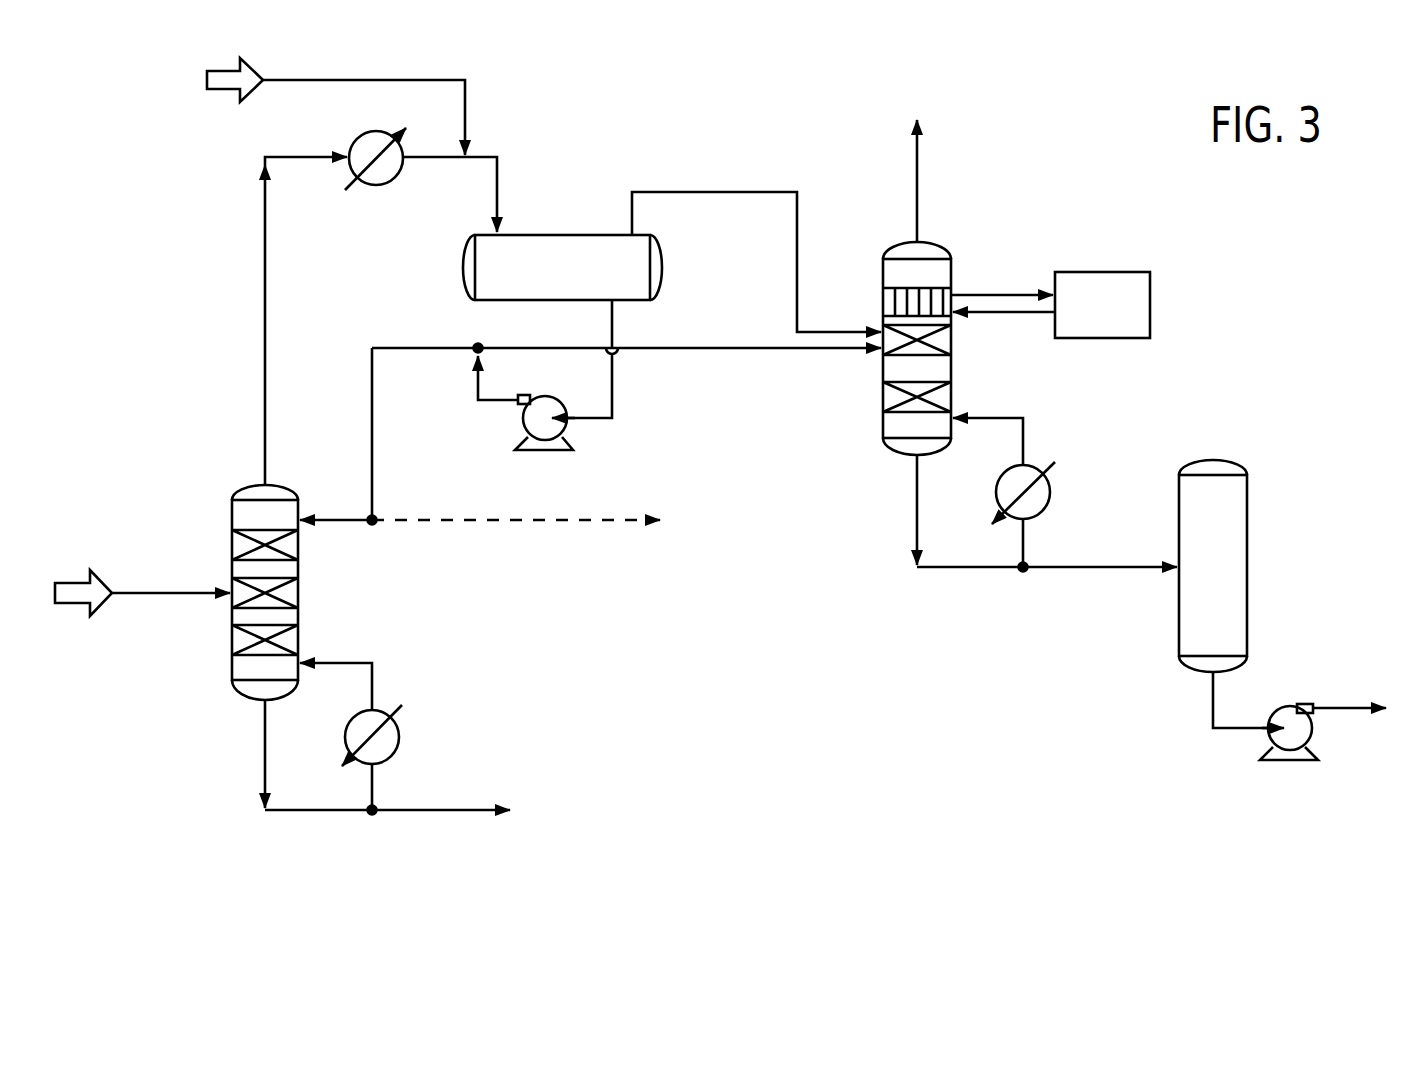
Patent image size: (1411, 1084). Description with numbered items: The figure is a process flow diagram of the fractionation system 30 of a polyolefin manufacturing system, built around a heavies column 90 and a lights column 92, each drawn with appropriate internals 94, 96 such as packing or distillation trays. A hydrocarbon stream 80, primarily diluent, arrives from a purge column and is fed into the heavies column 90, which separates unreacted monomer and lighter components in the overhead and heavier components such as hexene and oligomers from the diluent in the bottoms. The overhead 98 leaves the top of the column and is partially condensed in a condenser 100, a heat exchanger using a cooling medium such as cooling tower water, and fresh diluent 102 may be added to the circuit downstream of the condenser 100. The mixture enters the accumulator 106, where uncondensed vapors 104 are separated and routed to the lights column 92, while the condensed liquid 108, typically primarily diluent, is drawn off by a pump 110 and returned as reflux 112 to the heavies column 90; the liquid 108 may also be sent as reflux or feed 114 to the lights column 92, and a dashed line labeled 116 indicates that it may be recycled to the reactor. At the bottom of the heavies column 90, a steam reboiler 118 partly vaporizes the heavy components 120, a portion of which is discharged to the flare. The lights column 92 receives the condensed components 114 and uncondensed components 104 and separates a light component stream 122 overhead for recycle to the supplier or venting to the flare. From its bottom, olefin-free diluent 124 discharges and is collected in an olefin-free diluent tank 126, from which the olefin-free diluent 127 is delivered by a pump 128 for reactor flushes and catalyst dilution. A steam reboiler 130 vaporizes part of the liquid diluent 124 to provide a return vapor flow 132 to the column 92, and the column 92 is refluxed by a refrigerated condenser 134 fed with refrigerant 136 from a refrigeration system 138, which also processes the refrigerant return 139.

The fractionation system 30 is at (122, 205).
The hydrocarbon stream 80 is at (168, 593).
The heavies column 90 is at (241, 696).
The lights column 92 is at (953, 350).
The internals 94 is at (290, 637).
The internals 96 is at (885, 395).
The overhead 98 is at (263, 328).
The condenser 100 is at (405, 149).
The fresh diluent 102 is at (298, 82).
The uncondensed vapors 104 is at (713, 192).
The accumulator 106 is at (463, 268).
The condensed liquid 108 is at (612, 380).
The pump 110 is at (522, 415).
The reflux 112 is at (370, 418).
The reflux or feed 114 is at (720, 348).
The recycle to reactor 116 is at (595, 520).
The steam reboiler 118 is at (378, 708).
The heavy components 120 is at (262, 762).
The light component stream 122 is at (912, 187).
The olefin-free diluent 124 is at (912, 503).
The olefin-free diluent tank 126 is at (1250, 567).
The olefin-free diluent 127 is at (1342, 712).
The pump 128 is at (1285, 746).
The steam reboiler 130 is at (1030, 465).
The return vapor flow 132 is at (995, 418).
The refrigerated condenser 134 is at (885, 300).
The refrigerant 136 is at (988, 314).
The refrigeration system 138 is at (1103, 272).
The refrigerant return 139 is at (1000, 292).